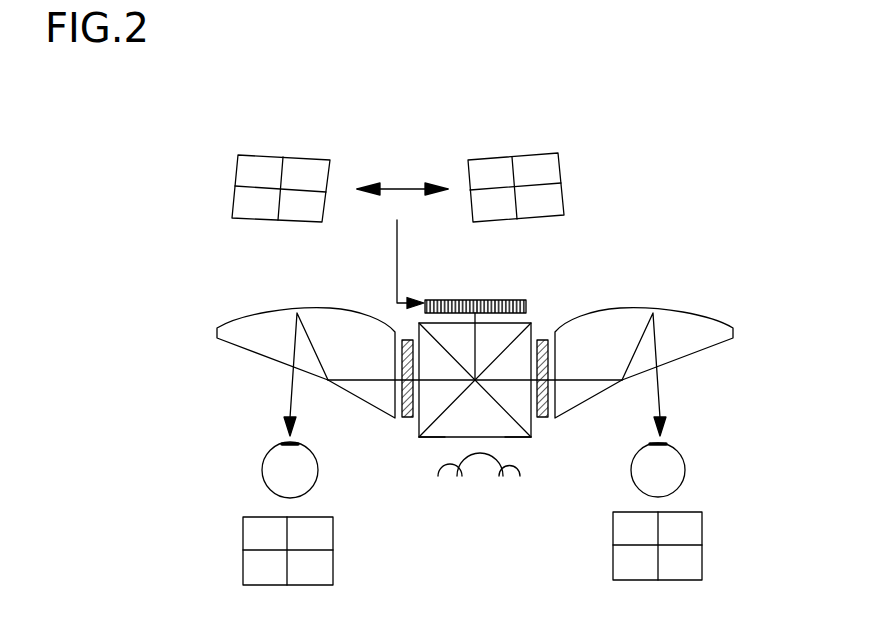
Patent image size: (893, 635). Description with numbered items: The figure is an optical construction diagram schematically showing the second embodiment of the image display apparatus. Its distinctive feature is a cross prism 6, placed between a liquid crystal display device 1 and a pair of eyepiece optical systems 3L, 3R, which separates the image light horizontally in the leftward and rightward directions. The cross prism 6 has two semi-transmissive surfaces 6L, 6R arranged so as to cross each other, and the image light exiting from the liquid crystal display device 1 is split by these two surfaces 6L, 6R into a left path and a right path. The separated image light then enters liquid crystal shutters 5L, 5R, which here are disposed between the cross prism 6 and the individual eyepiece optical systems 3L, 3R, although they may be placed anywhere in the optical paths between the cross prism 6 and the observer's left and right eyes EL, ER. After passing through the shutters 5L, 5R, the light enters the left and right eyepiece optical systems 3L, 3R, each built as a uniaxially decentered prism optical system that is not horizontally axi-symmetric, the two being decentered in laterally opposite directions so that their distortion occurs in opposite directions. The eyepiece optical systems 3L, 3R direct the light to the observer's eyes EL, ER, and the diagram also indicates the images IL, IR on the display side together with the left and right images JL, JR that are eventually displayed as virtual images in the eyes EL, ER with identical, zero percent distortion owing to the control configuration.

The liquid crystal display device 1 is at (535, 297).
The cross prism 6 is at (535, 322).
The left eyepiece optical system 3L is at (257, 313).
The right eyepiece optical system 3R is at (628, 308).
The left liquid crystal shutter 5L is at (405, 418).
The right liquid crystal shutter 5R is at (543, 418).
The semi-transmissive surface 6L is at (432, 432).
The semi-transmissive surface 6R is at (522, 437).
The left image IL is at (267, 222).
The right image IR is at (533, 222).
The left eye EL is at (262, 462).
The right eye ER is at (686, 465).
The left image JL is at (242, 563).
The right image JR is at (702, 553).